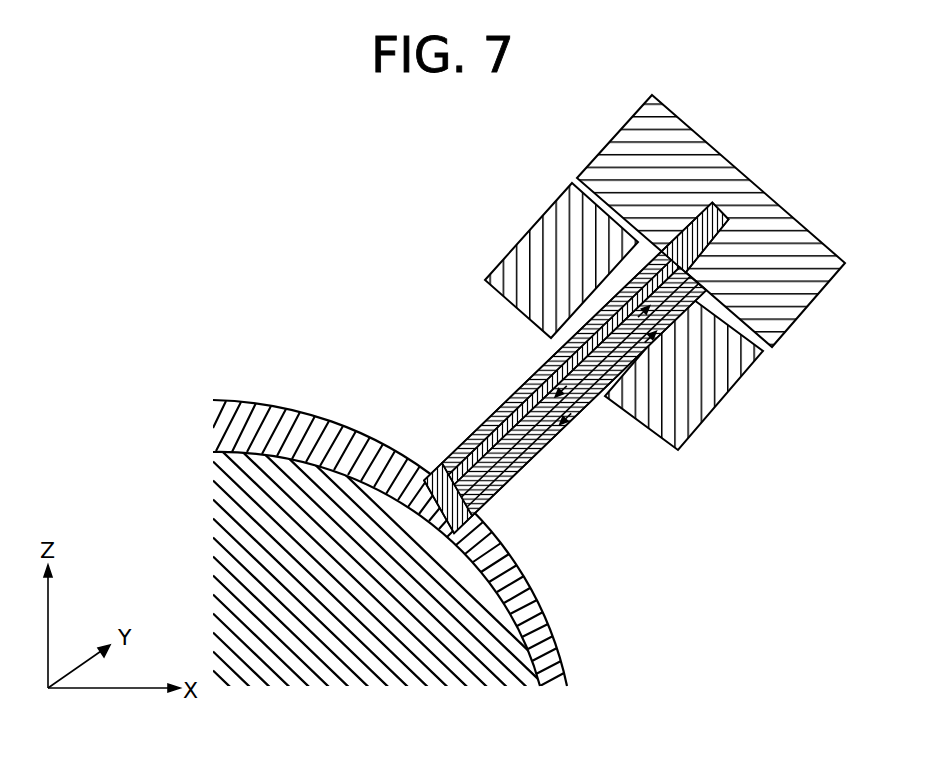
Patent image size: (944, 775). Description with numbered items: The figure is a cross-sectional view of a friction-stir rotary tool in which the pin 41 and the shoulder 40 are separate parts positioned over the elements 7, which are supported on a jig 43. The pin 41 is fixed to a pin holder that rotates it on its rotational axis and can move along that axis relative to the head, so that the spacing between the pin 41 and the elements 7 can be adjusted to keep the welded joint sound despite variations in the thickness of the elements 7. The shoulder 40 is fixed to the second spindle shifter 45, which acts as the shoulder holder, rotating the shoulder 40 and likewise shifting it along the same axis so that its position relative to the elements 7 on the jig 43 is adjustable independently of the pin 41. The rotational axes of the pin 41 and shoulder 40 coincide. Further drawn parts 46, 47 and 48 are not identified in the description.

The elements 7 is at (545, 648).
The shoulder 40 is at (567, 370).
The pin 41 is at (452, 494).
The jig 43 is at (332, 655).
The second spindle shifter 45 is at (714, 393).
The plate with horizontal hatching 46 is at (790, 300).
The lower layer of bar 47 is at (589, 398).
The upper layer of bar 48 is at (566, 362).